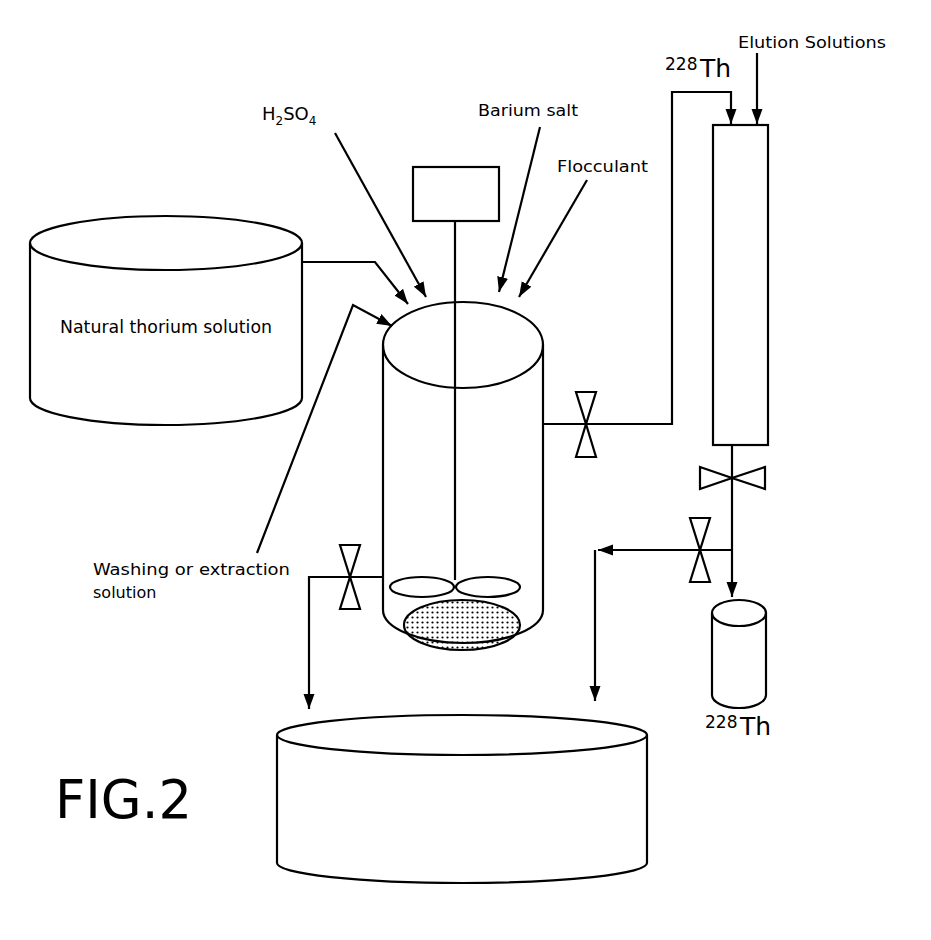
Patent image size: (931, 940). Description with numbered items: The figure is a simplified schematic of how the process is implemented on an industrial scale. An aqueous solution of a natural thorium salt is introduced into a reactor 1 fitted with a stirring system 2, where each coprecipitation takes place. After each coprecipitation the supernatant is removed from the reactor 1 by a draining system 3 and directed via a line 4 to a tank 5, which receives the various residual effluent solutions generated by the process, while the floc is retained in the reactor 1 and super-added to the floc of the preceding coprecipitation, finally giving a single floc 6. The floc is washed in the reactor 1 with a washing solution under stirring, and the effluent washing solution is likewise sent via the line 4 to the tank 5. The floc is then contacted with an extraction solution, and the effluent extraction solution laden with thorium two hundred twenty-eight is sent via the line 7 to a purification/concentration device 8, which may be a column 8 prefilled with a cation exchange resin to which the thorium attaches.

The reactor 1 is at (543, 497).
The stirring system 2 is at (452, 495).
The draining system 3 is at (382, 572).
The line 4 is at (309, 645).
The tank 5 is at (637, 787).
The floc 6 is at (462, 652).
The line 7 is at (650, 424).
The purification/concentration device 8 is at (768, 243).